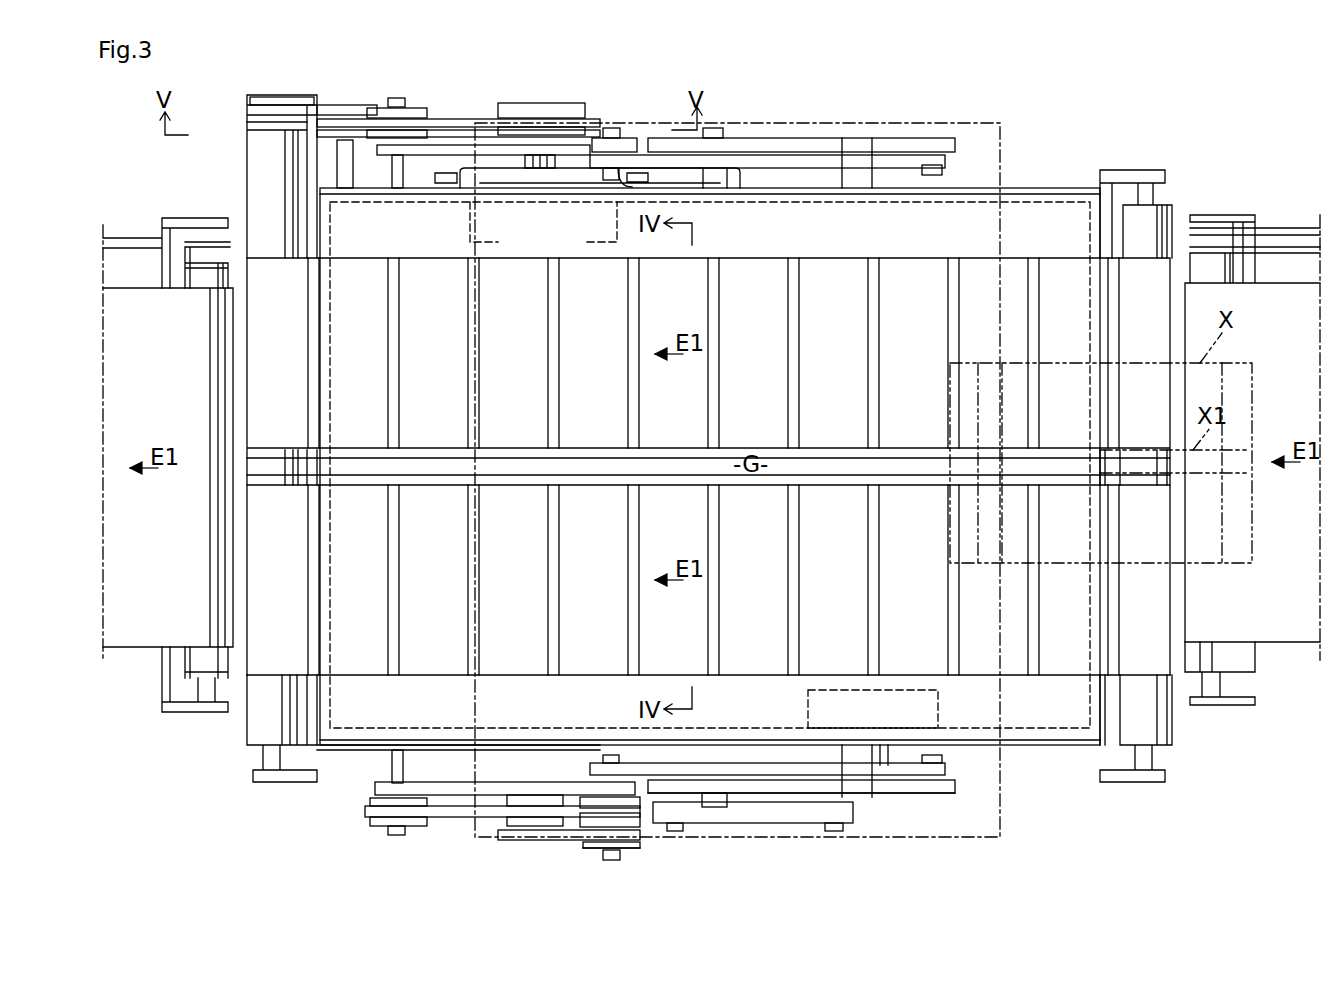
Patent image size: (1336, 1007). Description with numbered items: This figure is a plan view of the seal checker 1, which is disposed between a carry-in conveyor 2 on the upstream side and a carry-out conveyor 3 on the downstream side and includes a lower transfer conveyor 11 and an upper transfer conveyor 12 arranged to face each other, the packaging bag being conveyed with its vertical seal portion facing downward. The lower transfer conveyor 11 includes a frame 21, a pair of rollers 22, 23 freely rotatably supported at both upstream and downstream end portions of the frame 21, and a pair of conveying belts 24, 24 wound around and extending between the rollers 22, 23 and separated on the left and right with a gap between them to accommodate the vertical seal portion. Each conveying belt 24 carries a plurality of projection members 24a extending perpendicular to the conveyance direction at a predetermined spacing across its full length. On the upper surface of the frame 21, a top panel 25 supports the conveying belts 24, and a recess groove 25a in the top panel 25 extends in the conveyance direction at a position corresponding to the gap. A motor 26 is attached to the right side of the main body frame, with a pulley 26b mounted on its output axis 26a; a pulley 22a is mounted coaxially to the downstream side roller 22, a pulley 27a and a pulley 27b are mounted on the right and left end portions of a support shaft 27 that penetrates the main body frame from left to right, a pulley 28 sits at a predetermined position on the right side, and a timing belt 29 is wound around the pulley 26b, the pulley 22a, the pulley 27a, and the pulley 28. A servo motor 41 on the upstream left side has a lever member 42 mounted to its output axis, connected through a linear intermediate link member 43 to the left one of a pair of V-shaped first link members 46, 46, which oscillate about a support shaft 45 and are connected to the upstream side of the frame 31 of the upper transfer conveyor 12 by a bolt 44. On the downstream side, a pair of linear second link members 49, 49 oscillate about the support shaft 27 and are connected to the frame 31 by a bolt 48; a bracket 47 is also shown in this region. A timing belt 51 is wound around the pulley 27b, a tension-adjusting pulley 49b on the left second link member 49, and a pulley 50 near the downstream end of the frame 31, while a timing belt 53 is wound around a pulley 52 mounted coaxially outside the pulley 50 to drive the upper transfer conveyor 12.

The seal checker 1 is at (1061, 162).
The carry-in conveyor 2 is at (1284, 214).
The carry-out conveyor 3 is at (150, 212).
The lower transfer conveyor 11 is at (243, 758).
The upper transfer conveyor 12 is at (1012, 801).
The frame 21 is at (1064, 758).
The roller 22 is at (258, 222).
The pulley 22a is at (250, 133).
The roller 23 is at (1172, 215).
The conveying belt 24 is at (708, 466).
The projection member 24a is at (398, 420).
The top panel 25 is at (710, 696).
The recess groove 25a is at (556, 470).
The motor 26 is at (606, 222).
The output axis 26a is at (545, 168).
The pulley 26b is at (582, 115).
The support shaft 27 is at (400, 768).
The pulley 27a is at (430, 112).
The pulley 27b is at (368, 825).
The pulley 28 is at (356, 145).
The timing belt 29 is at (258, 122).
The frame 31 is at (960, 770).
The servo motor 41 is at (808, 702).
The lever member 42 is at (905, 795).
The intermediate link member 43 is at (800, 822).
The bolt 44 is at (944, 172).
The support shaft 45 is at (715, 808).
The first link member 46 is at (948, 142).
The bracket 47 is at (860, 140).
The bolt 48 is at (604, 180).
The second link member 49 is at (632, 142).
The pulley 49b is at (525, 795).
The pulley 50 is at (595, 795).
The timing belt 51 is at (378, 812).
The pulley 52 is at (582, 845).
The timing belt 53 is at (500, 838).